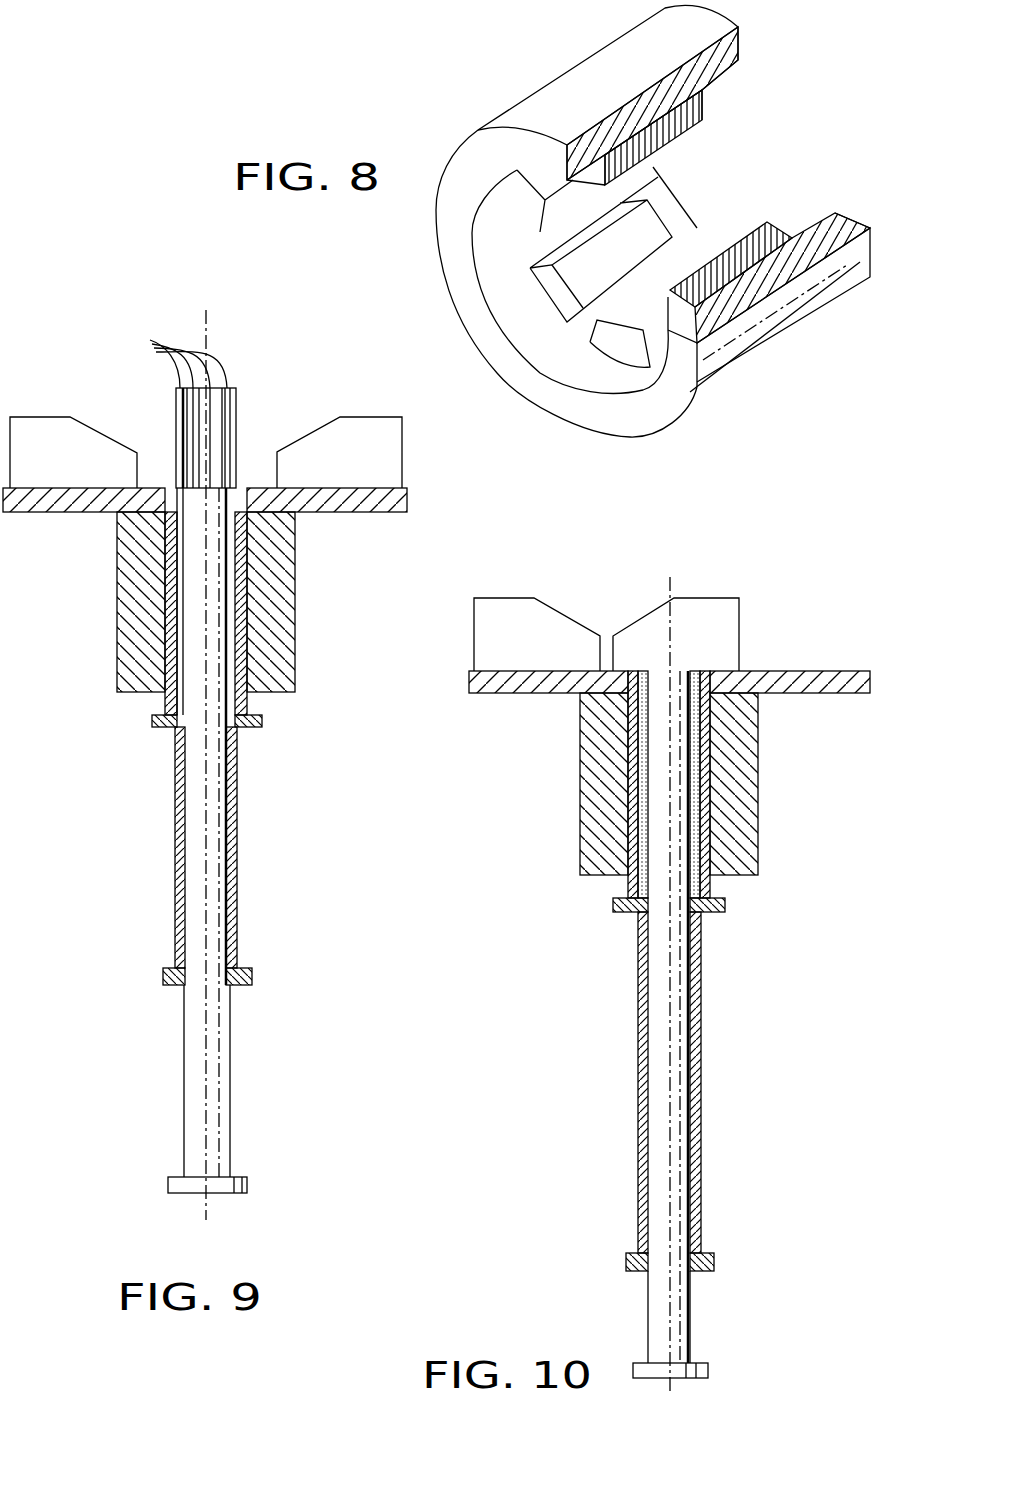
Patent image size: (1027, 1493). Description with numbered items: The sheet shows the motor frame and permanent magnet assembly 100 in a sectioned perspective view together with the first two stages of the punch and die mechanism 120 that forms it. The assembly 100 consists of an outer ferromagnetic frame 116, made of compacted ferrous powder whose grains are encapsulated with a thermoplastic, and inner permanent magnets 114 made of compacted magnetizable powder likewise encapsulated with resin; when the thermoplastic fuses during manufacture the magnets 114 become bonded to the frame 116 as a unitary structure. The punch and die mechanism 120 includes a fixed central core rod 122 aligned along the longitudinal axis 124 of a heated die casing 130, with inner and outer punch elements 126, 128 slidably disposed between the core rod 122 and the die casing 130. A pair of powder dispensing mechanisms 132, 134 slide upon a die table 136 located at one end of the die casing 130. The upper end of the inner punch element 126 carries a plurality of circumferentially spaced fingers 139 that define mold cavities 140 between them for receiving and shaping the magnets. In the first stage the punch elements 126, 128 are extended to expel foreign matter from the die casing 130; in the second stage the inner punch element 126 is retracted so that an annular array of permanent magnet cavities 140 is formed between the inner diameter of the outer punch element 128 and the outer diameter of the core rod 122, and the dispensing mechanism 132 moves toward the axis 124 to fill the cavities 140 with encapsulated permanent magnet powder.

In FIG. 8, the motor frame and permanent magnet assembly 100 is at (522, 80).
In FIG. 8, the permanent magnets 114 is at (633, 175).
In FIG. 8, the ferromagnetic frame 116 is at (823, 262).
In FIG. 9, the punch and die mechanism 120 is at (80, 665).
In FIG. 10, the punch and die mechanism 120 is at (541, 838).
In FIG. 9, the central core rod 122 is at (198, 1120).
In FIG. 10, the central core rod 122 is at (661, 1306).
In FIG. 9, the longitudinal axis 124 is at (202, 335).
In FIG. 10, the longitudinal axis 124 is at (669, 590).
In FIG. 9, the inner punch element 126 is at (237, 802).
In FIG. 10, the inner punch element 126 is at (699, 984).
In FIG. 9, the outer punch element 128 is at (250, 727).
In FIG. 10, the outer punch element 128 is at (707, 897).
In FIG. 9, the heated die casing 130 is at (280, 642).
In FIG. 10, the heated die casing 130 is at (738, 822).
In FIG. 9, the powder dispensing mechanism 132 is at (318, 440).
In FIG. 10, the powder dispensing mechanism 132 is at (715, 638).
In FIG. 9, the powder dispensing mechanism 134 is at (45, 432).
In FIG. 10, the powder dispensing mechanism 134 is at (508, 613).
In FIG. 9, the die table 136 is at (333, 508).
In FIG. 10, the die table 136 is at (810, 688).
In FIG. 9, the circumferentially spaced fingers 139 is at (172, 407).
In FIG. 10, the permanent magnet cavities 140 is at (637, 712).